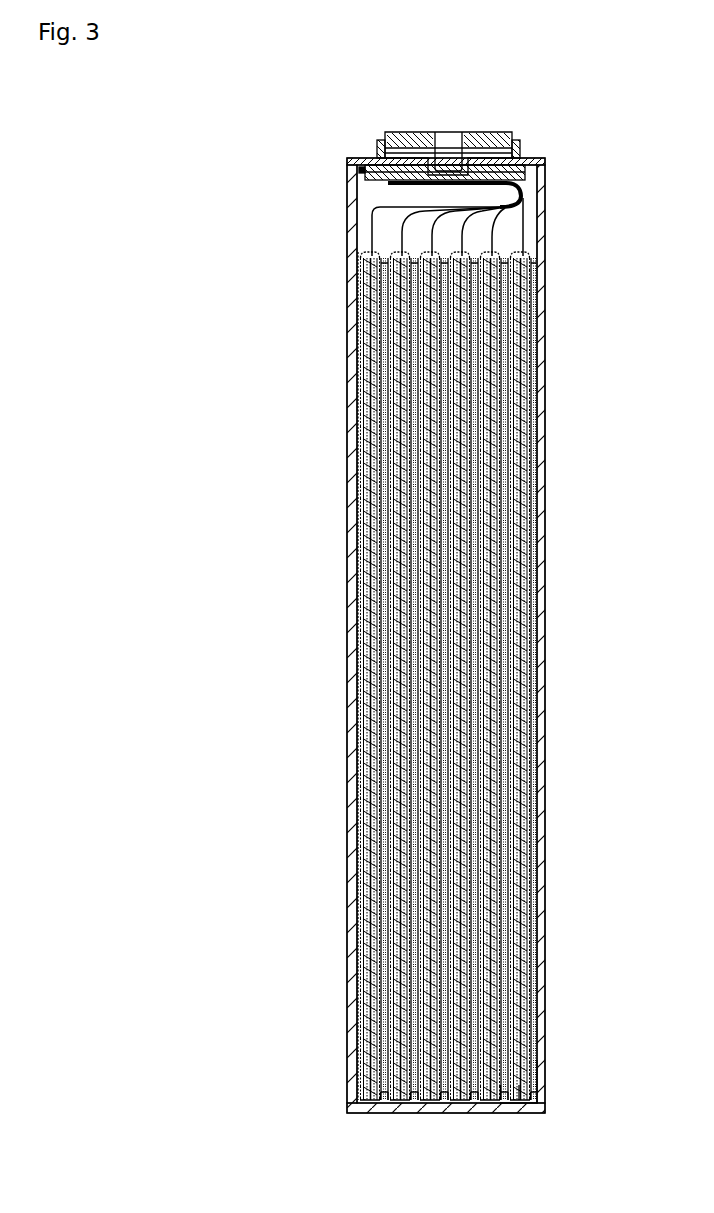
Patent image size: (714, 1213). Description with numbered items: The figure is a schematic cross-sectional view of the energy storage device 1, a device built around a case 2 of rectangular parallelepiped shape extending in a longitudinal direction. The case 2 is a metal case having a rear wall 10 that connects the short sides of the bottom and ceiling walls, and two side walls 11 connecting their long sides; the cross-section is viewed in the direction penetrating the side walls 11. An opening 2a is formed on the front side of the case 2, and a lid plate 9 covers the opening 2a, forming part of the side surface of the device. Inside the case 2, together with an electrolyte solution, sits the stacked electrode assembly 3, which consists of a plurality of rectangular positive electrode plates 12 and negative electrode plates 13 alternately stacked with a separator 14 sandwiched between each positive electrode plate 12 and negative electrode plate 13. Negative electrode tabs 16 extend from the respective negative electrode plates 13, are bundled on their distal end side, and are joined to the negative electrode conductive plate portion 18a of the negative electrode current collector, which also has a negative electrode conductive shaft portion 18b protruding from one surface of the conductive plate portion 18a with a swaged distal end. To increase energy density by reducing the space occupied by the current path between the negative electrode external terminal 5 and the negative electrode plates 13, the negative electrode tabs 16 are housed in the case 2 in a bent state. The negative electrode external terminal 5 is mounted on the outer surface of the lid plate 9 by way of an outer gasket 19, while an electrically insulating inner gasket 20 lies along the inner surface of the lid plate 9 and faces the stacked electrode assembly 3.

The energy storage device 1 is at (184, 295).
The case 2 is at (347, 678).
The opening 2a is at (546, 158).
The stacked electrode assembly 3 is at (355, 775).
The negative electrode external terminal 5 is at (390, 131).
The lid plate 9 is at (362, 162).
The rear wall 10 is at (392, 1113).
The side wall 11 is at (348, 862).
The positive electrode plate 12 is at (505, 1100).
The negative electrode plate 13 is at (518, 1100).
The separator 14 is at (539, 1082).
The negative electrode tab 16 is at (537, 205).
The negative electrode conductive plate portion 18a is at (527, 181).
The negative electrode conductive shaft portion 18b is at (455, 150).
The outer gasket 19 is at (518, 144).
The inner gasket 20 is at (362, 170).